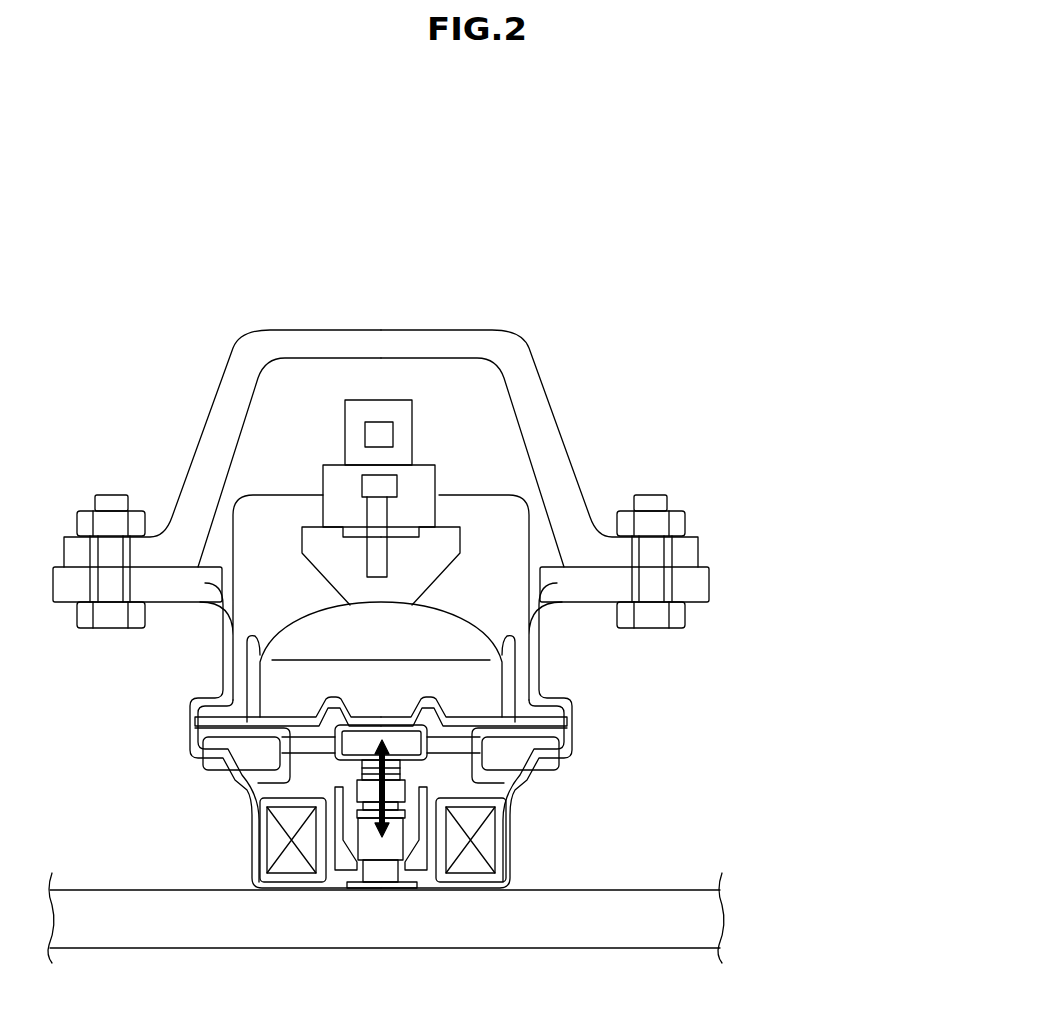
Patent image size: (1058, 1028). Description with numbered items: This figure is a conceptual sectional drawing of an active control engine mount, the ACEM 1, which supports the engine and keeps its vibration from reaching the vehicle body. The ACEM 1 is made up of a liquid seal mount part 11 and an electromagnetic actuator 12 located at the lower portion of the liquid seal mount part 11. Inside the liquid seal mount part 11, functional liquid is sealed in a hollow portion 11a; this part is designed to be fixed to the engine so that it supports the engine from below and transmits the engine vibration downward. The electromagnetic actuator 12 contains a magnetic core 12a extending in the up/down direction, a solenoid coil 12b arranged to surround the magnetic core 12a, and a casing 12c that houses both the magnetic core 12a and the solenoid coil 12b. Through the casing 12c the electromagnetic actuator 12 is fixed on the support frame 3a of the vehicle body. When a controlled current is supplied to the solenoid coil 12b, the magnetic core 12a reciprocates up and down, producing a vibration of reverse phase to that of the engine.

The ACEM 1 is at (636, 327).
The liquid seal mount part 11 is at (557, 440).
The hollow portion 11a is at (446, 378).
The electromagnetic actuator 12 is at (557, 823).
The magnetic core 12a is at (365, 866).
The solenoid coil 12b is at (487, 848).
The casing 12c is at (513, 830).
The support frame 3a is at (440, 933).